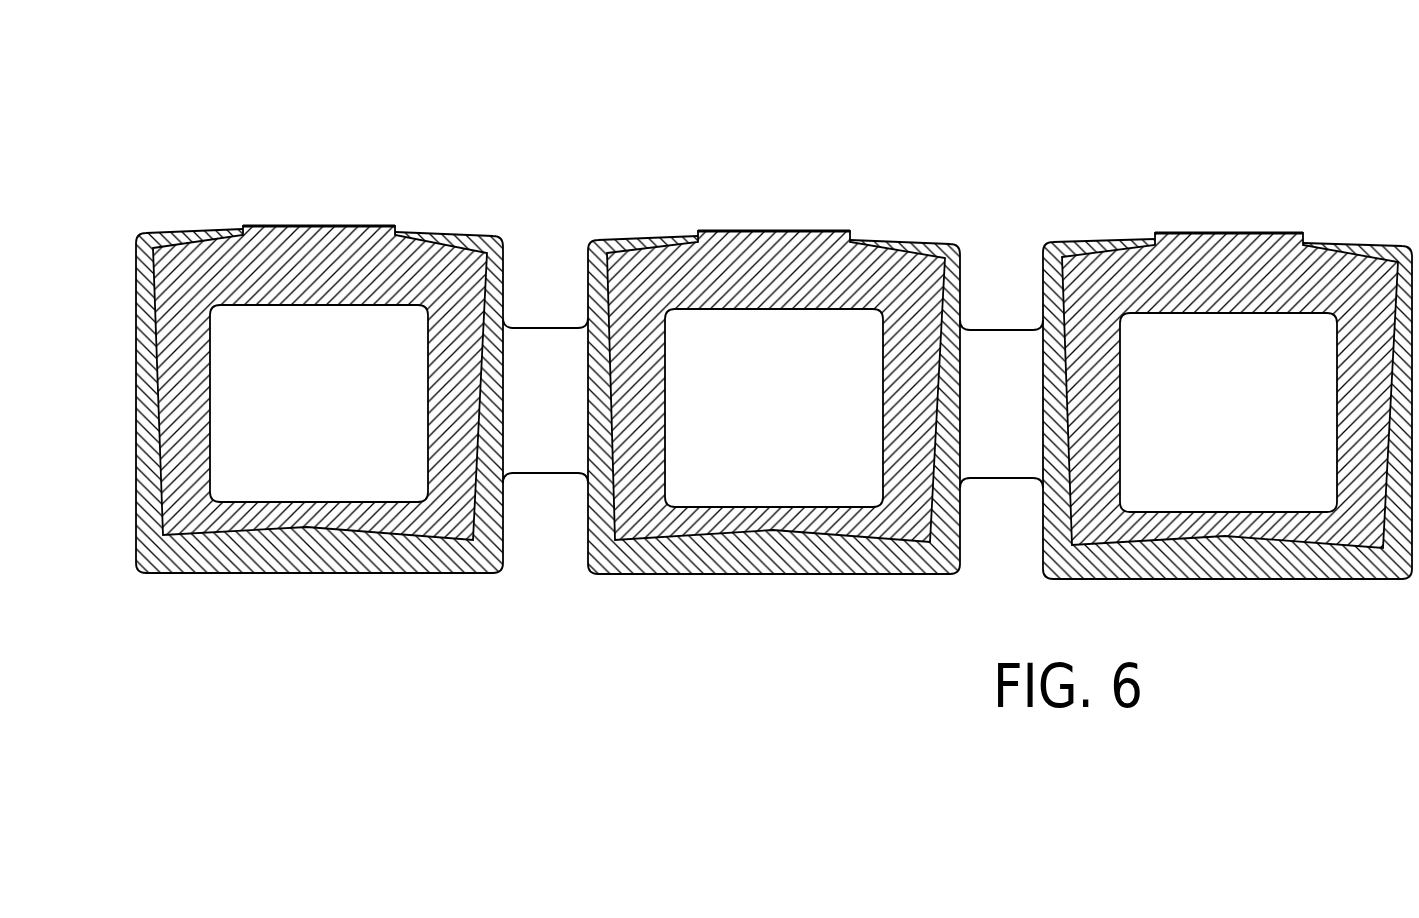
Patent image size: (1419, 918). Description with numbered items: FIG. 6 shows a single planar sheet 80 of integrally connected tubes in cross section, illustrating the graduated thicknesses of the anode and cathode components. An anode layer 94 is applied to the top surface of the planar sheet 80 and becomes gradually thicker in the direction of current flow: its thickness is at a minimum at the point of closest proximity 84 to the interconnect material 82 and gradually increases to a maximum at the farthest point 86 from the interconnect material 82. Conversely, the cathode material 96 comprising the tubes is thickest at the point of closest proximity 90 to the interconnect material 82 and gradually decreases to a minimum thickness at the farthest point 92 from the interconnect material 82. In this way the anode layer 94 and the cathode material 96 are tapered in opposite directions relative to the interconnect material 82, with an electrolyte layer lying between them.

The planar sheet 80 is at (970, 115).
The interconnect material 82 is at (323, 227).
The point of closest proximity 84 is at (865, 240).
The farthest point 86 is at (768, 575).
The point of closest proximity 90 is at (317, 267).
The farthest point 92 is at (325, 507).
The anode layer 94 is at (1244, 570).
The cathode material 96 is at (1244, 287).